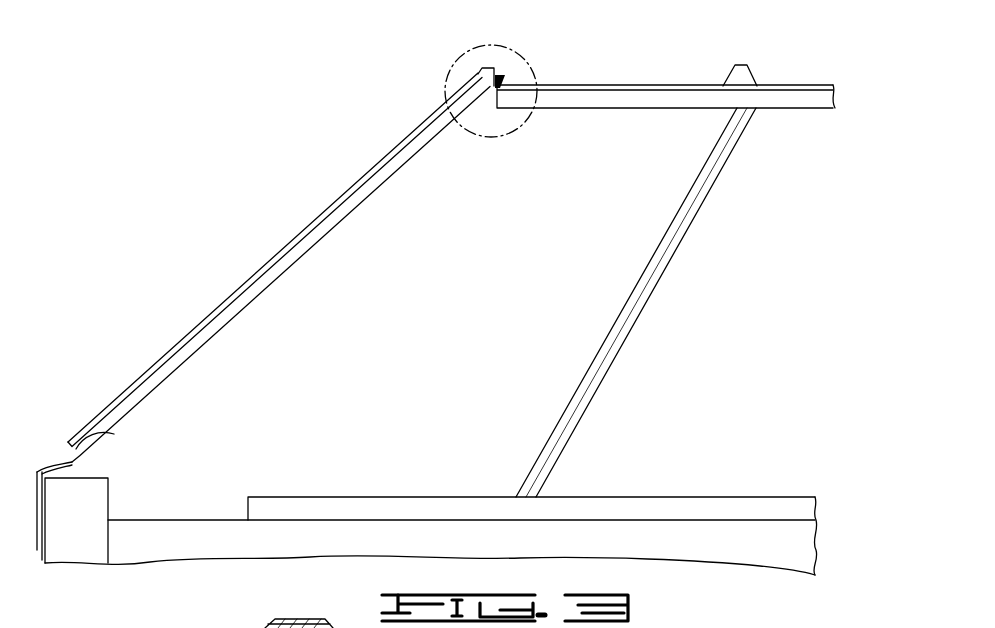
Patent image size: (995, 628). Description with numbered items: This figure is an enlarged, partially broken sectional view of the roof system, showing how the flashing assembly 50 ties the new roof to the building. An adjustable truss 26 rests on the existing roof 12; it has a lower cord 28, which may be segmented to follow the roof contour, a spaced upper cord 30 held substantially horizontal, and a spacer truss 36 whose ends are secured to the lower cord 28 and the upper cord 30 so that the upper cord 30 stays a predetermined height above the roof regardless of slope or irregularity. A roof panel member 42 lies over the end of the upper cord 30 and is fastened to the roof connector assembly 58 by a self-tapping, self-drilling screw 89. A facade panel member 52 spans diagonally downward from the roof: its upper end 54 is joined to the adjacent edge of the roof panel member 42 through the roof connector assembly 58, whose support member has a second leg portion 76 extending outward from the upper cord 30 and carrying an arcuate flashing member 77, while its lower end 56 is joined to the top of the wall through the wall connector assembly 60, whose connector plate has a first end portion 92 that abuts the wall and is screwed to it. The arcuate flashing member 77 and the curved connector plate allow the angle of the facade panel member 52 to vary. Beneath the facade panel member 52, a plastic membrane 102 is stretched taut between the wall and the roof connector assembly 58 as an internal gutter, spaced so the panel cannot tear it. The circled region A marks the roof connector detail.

The existing roof 12 is at (147, 547).
The adjustable truss 26 is at (688, 254).
The lower cord 28 is at (600, 497).
The upper cord 30 is at (542, 108).
The spacer truss 36 is at (632, 292).
The roof panel member 42 is at (630, 85).
The flashing assembly 50 is at (343, 167).
The facade panel member 52 is at (402, 133).
The upper end 54 is at (460, 92).
The lower end 56 is at (87, 425).
The roof connector assembly 58 is at (506, 76).
The wall connector assembly 60 is at (55, 452).
The second leg portion 76 is at (298, 618).
The flashing member 77 is at (458, 82).
The self-tapping, self-drilling screw 89 is at (244, 627).
The first end portion 92 is at (36, 554).
The plastic membrane 102 is at (316, 256).
The detail area A is at (497, 137).